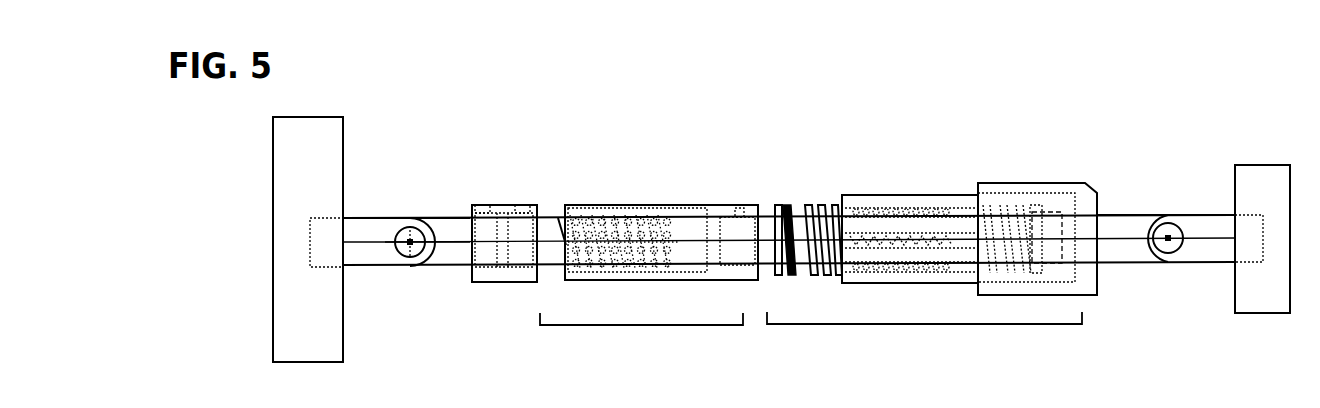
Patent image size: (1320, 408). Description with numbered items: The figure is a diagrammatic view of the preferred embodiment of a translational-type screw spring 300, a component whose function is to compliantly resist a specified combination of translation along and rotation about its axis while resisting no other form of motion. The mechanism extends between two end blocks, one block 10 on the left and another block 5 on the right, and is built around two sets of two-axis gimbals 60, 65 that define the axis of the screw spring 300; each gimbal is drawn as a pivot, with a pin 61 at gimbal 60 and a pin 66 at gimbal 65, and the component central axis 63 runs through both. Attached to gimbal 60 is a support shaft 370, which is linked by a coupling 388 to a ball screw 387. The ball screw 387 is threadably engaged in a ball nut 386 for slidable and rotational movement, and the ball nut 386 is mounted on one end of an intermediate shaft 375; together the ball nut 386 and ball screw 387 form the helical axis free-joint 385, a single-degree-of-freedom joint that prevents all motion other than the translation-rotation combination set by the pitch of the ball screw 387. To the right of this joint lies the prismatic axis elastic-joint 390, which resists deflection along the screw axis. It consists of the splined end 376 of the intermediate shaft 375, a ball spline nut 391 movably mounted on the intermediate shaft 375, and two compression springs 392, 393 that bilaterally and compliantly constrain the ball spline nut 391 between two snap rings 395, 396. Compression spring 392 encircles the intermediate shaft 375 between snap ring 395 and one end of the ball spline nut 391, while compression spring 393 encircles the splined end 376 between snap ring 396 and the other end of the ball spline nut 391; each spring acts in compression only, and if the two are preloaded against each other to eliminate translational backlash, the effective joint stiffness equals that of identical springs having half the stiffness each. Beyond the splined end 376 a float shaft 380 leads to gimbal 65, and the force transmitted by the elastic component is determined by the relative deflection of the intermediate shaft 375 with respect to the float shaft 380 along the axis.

The drive unit 5 is at (1267, 198).
The driven unit 10 is at (317, 168).
The gimbal 60 is at (398, 275).
The first pivot pin 61 is at (411, 223).
The component central axis 63 is at (453, 250).
The gimbal 65 is at (1162, 285).
The second pivot pin 66 is at (1175, 225).
The translational-type screw spring 300 is at (890, 118).
The support shaft 370 is at (450, 218).
The intermediate shaft 375 is at (767, 207).
The splined end 376 is at (1057, 213).
The float shaft 380 is at (1130, 215).
The helical axis free-joint 385 is at (641, 335).
The ball nut 386 is at (688, 200).
The ball screw 387 is at (546, 213).
The coupling 388 is at (505, 288).
The prismatic axis elastic-joint 390 is at (924, 333).
The ball spline nut 391 is at (912, 195).
The compression spring 392 is at (815, 205).
The compression spring 393 is at (1002, 208).
The snap ring 395 is at (770, 205).
The snap ring 396 is at (1040, 202).